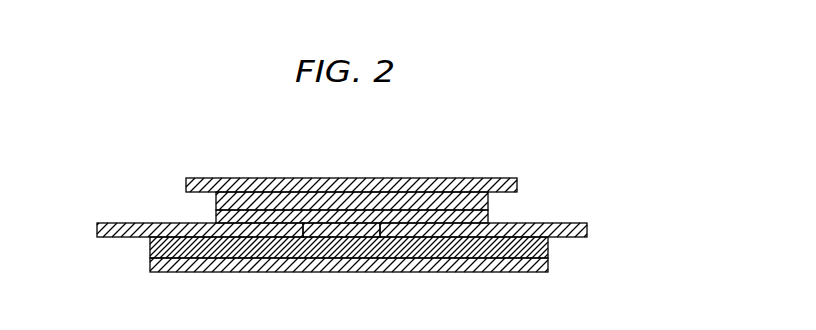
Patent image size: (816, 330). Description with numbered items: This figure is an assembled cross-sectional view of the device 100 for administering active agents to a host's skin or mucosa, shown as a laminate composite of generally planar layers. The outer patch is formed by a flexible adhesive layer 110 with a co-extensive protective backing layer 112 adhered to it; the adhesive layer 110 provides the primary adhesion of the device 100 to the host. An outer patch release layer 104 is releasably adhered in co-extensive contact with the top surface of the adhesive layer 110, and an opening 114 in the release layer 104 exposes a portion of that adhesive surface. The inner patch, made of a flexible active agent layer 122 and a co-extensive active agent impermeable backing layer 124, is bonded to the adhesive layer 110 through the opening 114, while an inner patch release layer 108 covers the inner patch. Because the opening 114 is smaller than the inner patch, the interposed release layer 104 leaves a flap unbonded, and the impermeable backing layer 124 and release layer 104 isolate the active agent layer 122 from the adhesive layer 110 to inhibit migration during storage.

The device 100 is at (218, 160).
The outer patch release layer 104 is at (585, 220).
The inner patch release layer 108 is at (422, 180).
The adhesive layer 110 is at (549, 268).
The protective backing layer 112 is at (526, 250).
The opening 114 is at (333, 223).
The active agent layer 122 is at (488, 212).
The active agent impermeable backing layer 124 is at (216, 213).